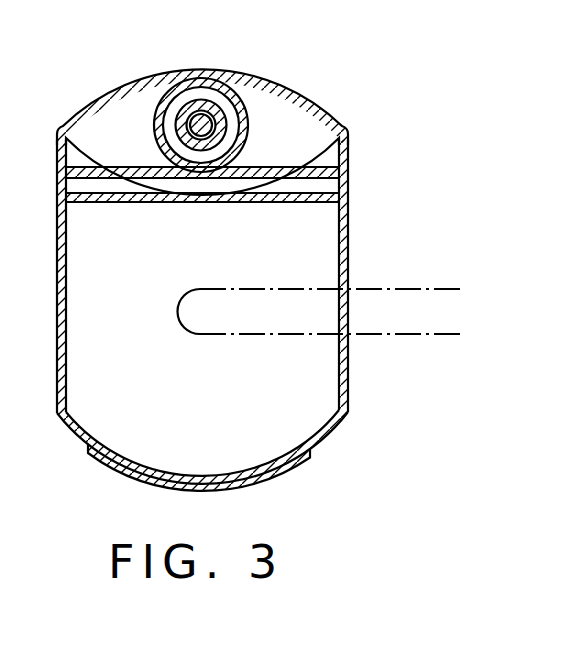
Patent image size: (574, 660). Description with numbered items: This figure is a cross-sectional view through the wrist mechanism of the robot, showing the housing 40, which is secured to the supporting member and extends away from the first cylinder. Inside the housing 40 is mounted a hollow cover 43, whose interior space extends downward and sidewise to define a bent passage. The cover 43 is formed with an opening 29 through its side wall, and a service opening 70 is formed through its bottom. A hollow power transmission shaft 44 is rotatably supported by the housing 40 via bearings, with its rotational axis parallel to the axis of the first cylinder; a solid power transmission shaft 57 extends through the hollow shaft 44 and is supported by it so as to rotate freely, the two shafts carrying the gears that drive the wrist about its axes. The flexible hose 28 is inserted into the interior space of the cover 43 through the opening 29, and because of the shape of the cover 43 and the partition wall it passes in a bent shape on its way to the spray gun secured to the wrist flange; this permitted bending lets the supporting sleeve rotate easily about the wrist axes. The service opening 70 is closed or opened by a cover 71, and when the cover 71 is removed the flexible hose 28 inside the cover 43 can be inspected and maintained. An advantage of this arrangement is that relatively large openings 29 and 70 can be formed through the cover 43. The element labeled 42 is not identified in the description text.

The flexible hose 28 is at (374, 287).
The opening 29 is at (346, 378).
The housing 40 is at (308, 112).
The upper partition plate 42 is at (296, 172).
The cover 43 is at (352, 207).
The hollow power transmission shaft 44 is at (194, 98).
The solid power transmission shaft 57 is at (214, 97).
The service opening 70 is at (191, 480).
The cover 71 is at (258, 483).